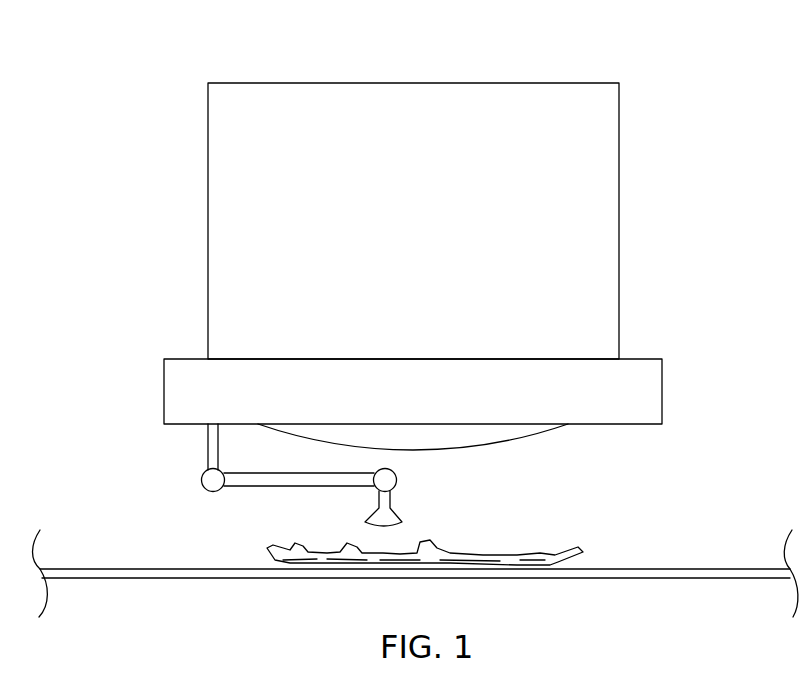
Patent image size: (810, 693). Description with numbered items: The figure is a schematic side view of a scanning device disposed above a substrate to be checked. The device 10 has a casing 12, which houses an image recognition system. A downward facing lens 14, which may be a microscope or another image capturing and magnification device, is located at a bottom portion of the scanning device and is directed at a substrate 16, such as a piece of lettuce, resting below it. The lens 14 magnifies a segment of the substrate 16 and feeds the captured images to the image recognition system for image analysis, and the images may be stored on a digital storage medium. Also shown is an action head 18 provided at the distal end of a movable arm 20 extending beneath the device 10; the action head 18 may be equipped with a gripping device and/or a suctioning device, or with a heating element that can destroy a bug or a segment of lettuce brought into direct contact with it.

The device 10 is at (433, 277).
The casing 12 is at (620, 257).
The lens 14 is at (542, 439).
The substrate 16 is at (521, 553).
The action head 18 is at (393, 515).
The movable arm 20 is at (258, 488).